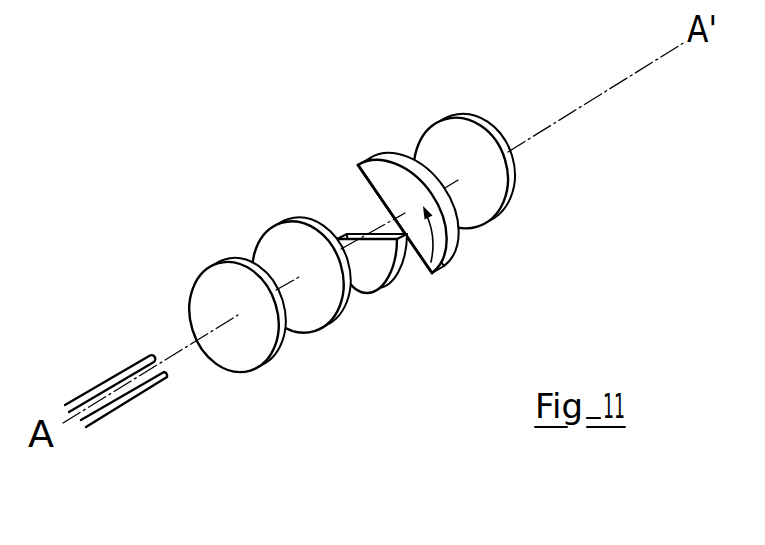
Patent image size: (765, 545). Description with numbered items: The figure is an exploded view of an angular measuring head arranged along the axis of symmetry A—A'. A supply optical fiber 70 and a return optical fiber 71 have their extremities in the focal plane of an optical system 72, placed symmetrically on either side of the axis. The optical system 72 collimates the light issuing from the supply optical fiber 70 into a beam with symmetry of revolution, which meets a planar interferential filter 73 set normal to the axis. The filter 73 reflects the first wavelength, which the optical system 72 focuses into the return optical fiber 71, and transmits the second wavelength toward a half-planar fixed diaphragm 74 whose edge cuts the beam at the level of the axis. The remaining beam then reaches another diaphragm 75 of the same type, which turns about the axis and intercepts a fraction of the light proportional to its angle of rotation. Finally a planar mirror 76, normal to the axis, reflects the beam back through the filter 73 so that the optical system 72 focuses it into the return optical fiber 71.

The supply optical fiber 70 is at (127, 398).
The return optical fiber 71 is at (101, 386).
The optical system 72 is at (214, 300).
The planar interferential filter 73 is at (277, 255).
The half-planar fixed diaphragm 74 is at (369, 286).
The turning diaphragm 75 is at (437, 268).
The planar mirror 76 is at (445, 155).